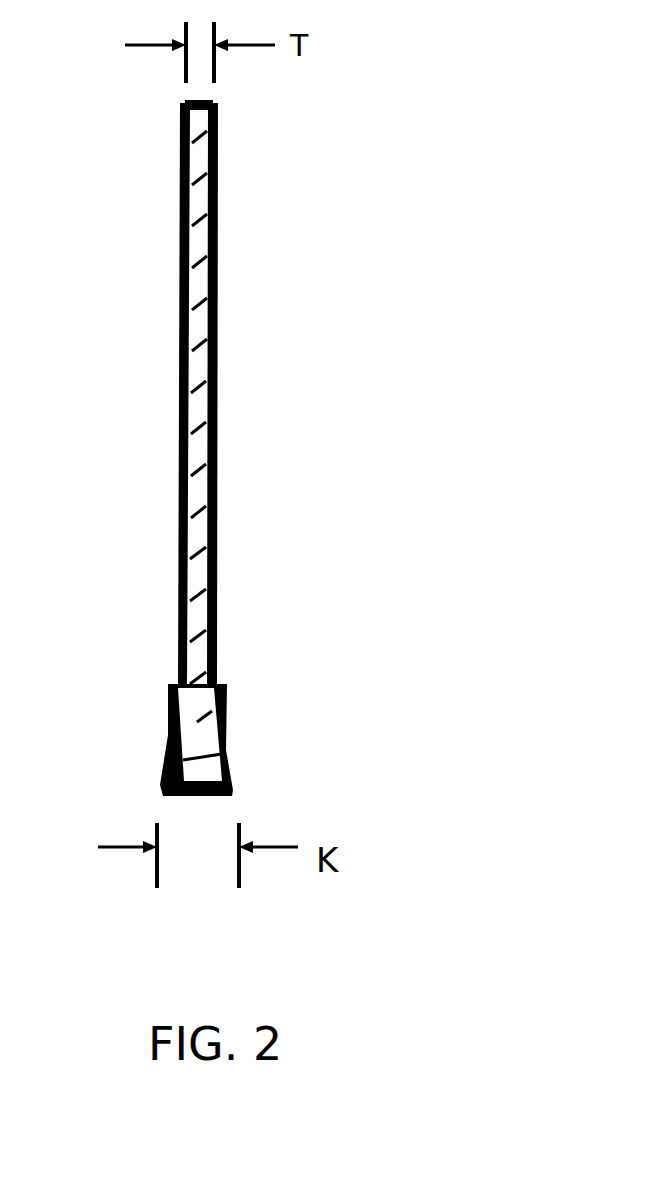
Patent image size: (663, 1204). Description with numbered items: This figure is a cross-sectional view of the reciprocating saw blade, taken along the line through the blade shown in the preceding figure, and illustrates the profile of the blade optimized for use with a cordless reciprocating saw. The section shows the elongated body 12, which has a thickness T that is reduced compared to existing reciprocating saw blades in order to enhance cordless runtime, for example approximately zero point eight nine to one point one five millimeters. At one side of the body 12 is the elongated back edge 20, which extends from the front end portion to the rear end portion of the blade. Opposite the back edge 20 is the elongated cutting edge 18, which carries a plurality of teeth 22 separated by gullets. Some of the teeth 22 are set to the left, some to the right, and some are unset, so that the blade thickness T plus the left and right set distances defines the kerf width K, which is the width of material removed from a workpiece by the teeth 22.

The elongated body 12 is at (195, 528).
The cutting edge 18 is at (168, 789).
The back edge 20 is at (197, 98).
The teeth 22 is at (210, 767).